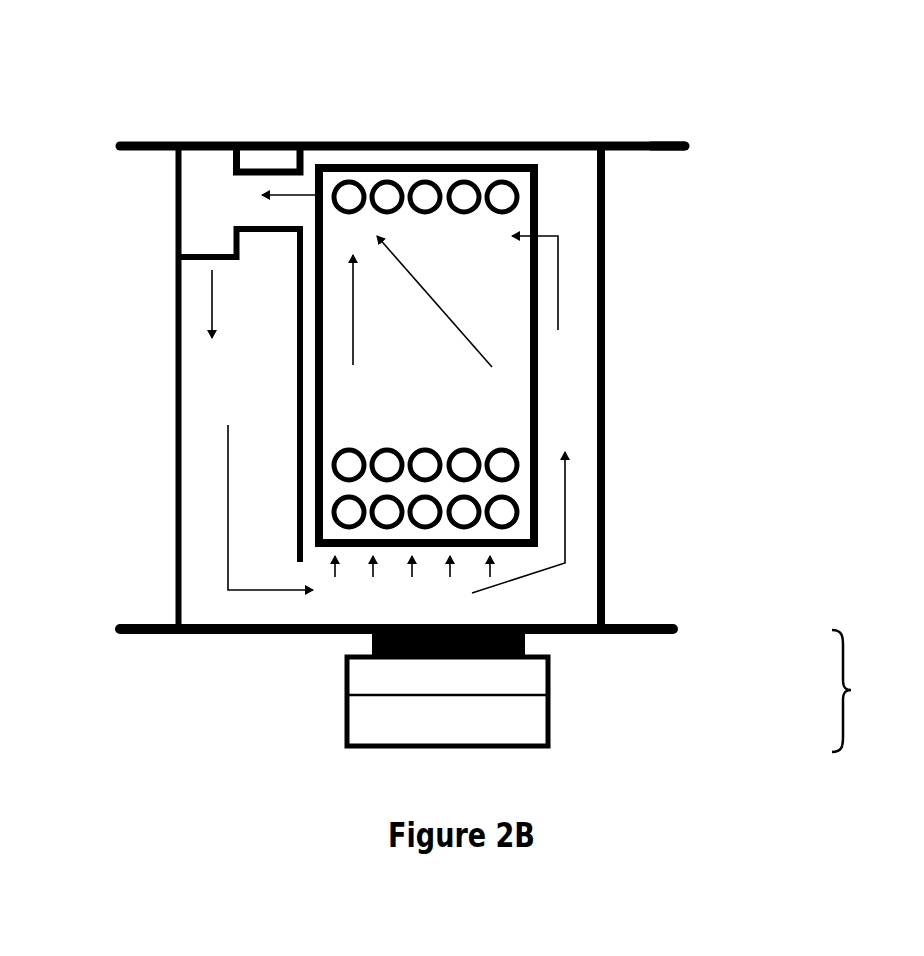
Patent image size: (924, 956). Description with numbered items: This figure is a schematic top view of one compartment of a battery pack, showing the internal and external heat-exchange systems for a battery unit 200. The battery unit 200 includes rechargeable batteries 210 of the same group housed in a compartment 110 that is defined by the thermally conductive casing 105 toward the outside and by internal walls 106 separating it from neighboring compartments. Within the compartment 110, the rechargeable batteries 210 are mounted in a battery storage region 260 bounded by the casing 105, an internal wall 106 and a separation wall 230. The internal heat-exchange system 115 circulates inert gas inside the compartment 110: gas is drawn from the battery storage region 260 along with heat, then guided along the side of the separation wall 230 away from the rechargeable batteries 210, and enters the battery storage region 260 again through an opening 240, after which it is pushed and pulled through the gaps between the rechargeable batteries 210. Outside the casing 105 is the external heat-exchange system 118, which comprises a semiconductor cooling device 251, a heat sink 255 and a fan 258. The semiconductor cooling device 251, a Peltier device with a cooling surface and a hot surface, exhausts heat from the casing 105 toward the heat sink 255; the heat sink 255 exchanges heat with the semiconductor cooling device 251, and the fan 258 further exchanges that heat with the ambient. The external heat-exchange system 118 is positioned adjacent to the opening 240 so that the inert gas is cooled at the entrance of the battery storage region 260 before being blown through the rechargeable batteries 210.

The battery unit 200 is at (623, 139).
The casing 105 is at (342, 141).
The internal wall 106 is at (177, 303).
The internal heat-exchange system 115 is at (228, 185).
The separation wall 230 is at (297, 395).
The opening 240 is at (296, 612).
The compartment 110 is at (578, 378).
The battery storage region 260 is at (452, 396).
The rechargeable batteries 210 is at (425, 195).
The semiconductor cooling device 251 is at (525, 648).
The external heat-exchange system 118 is at (872, 691).
The heat sink 255 is at (377, 675).
The fan 258 is at (527, 717).